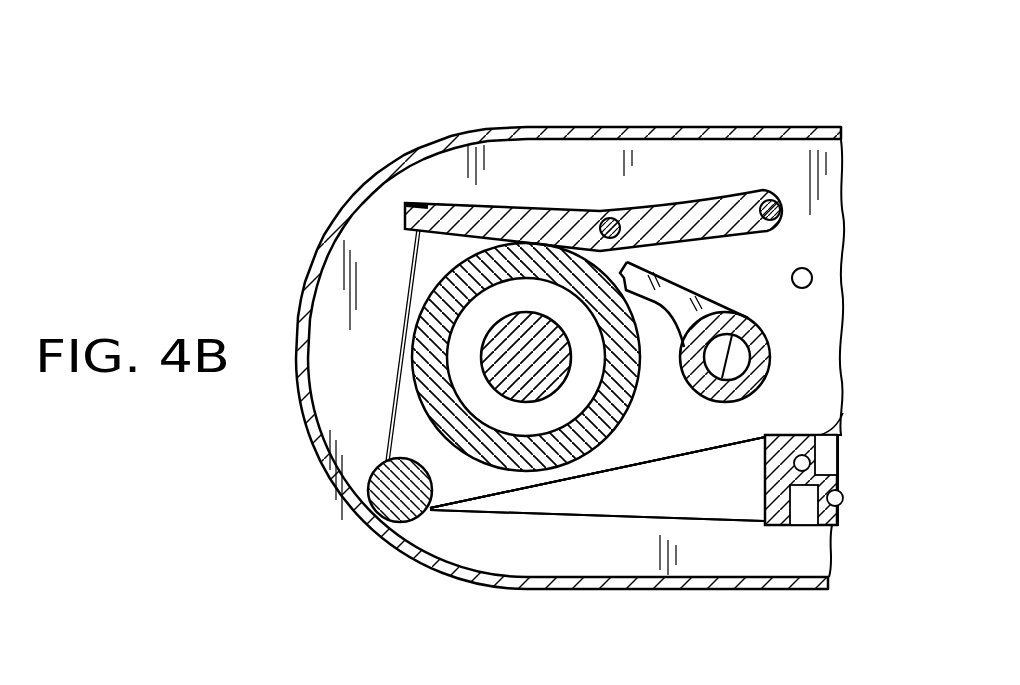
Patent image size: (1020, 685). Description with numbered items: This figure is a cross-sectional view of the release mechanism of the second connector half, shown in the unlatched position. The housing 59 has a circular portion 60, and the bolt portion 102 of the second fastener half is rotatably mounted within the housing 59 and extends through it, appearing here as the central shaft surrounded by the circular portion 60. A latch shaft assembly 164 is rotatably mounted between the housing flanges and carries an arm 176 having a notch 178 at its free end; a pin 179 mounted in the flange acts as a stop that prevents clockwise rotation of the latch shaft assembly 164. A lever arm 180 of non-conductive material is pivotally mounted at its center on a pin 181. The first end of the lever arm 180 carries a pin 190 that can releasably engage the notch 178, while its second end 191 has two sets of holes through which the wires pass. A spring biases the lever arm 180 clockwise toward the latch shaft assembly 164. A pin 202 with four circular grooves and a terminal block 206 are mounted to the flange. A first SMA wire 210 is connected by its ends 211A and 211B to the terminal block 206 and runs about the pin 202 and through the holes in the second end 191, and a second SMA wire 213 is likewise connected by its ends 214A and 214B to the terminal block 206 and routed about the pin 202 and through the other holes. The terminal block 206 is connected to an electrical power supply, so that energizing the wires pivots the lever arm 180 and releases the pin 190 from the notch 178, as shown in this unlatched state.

The housing 59 is at (390, 163).
The circular portion 60 is at (435, 296).
The bolt portion 102 is at (484, 367).
The latch shaft assembly 164 is at (770, 336).
The arm 176 is at (692, 283).
The notch 178 is at (507, 207).
The pin 179 is at (813, 278).
The lever arm 180 is at (447, 204).
The pin 181 is at (608, 218).
The pin 190 is at (772, 198).
The second end 191 is at (405, 206).
The pin 202 is at (368, 482).
The terminal block 206 is at (840, 412).
The first SMA wire 210 is at (403, 338).
The second SMA wire 213 is at (597, 550).
The end 211A is at (637, 462).
The end 214A is at (597, 550).
The end 211B is at (747, 523).
The end 214B is at (631, 587).